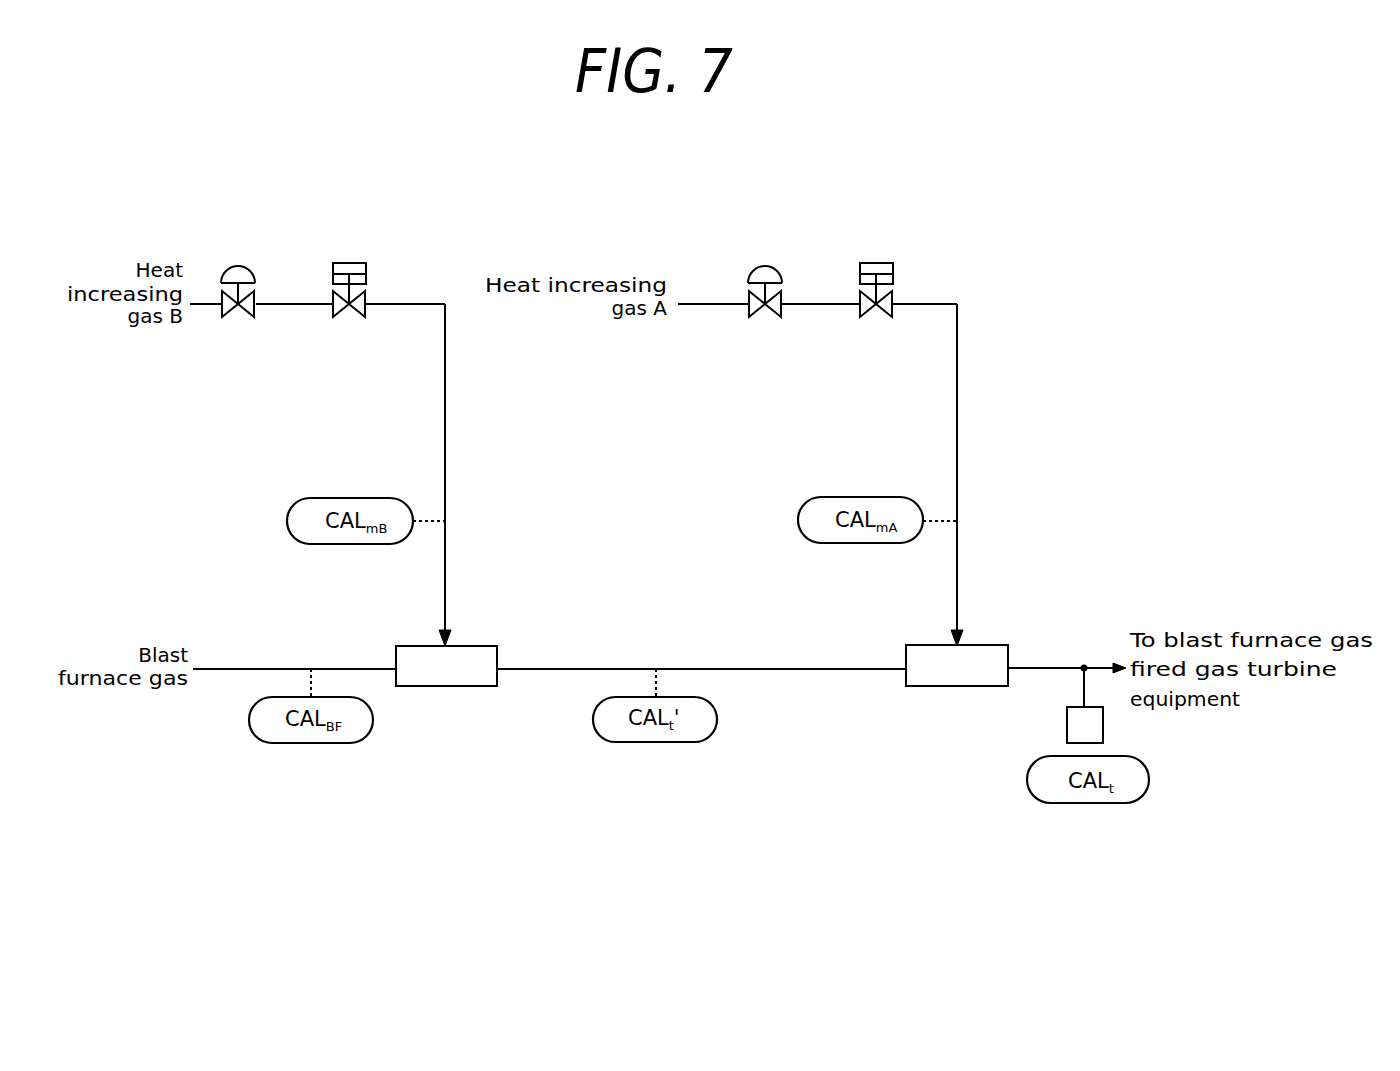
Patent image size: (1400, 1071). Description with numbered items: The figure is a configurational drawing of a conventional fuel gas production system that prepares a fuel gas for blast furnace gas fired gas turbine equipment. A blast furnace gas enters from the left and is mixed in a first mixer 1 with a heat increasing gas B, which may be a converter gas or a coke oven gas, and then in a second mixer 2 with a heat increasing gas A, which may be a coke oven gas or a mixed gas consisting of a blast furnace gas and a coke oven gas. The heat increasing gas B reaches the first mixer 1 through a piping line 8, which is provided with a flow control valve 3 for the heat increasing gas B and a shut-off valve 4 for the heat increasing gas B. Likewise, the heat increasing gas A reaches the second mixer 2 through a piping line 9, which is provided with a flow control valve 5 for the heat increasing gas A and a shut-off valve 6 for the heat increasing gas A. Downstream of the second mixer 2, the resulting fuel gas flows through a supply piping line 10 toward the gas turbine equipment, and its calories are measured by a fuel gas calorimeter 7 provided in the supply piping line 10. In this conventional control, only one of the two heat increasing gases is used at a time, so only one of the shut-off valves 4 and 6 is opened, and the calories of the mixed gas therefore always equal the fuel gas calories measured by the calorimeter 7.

The first mixer 1 is at (482, 644).
The second mixer 2 is at (989, 645).
The flow control valve for the heat increasing gas B 3 is at (233, 268).
The shut-off valve for the heat increasing gas B 4 is at (349, 262).
The flow control valve for the heat increasing gas A 5 is at (757, 268).
The shut-off valve for the heat increasing gas A 6 is at (871, 263).
The fuel gas calorimeter 7 is at (1067, 727).
The piping line 8 is at (447, 388).
The piping line 9 is at (959, 349).
The supply piping line 10 is at (1050, 666).